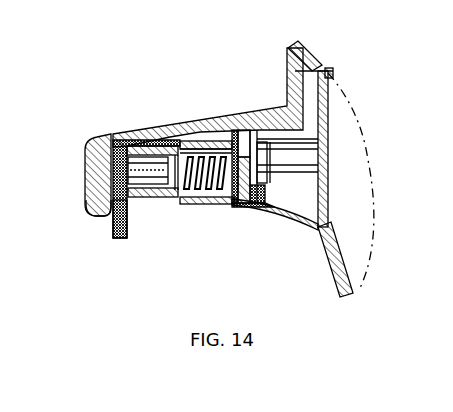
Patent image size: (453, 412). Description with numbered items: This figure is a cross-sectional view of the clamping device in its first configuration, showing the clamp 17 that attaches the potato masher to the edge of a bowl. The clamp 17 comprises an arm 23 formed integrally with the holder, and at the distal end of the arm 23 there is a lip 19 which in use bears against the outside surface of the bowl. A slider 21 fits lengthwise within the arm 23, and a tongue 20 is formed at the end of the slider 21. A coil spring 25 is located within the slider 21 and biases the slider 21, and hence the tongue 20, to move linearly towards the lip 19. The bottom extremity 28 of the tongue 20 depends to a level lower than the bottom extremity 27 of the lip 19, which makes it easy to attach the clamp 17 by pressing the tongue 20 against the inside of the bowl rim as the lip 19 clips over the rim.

The clamp 17 is at (145, 92).
The lip 19 is at (83, 192).
The tongue 20 is at (127, 210).
The slider 21 is at (152, 198).
The arm 23 is at (193, 118).
The coil spring 25 is at (205, 190).
The bottom extremity of the lip 27 is at (102, 214).
The bottom extremity of the tongue 28 is at (118, 238).